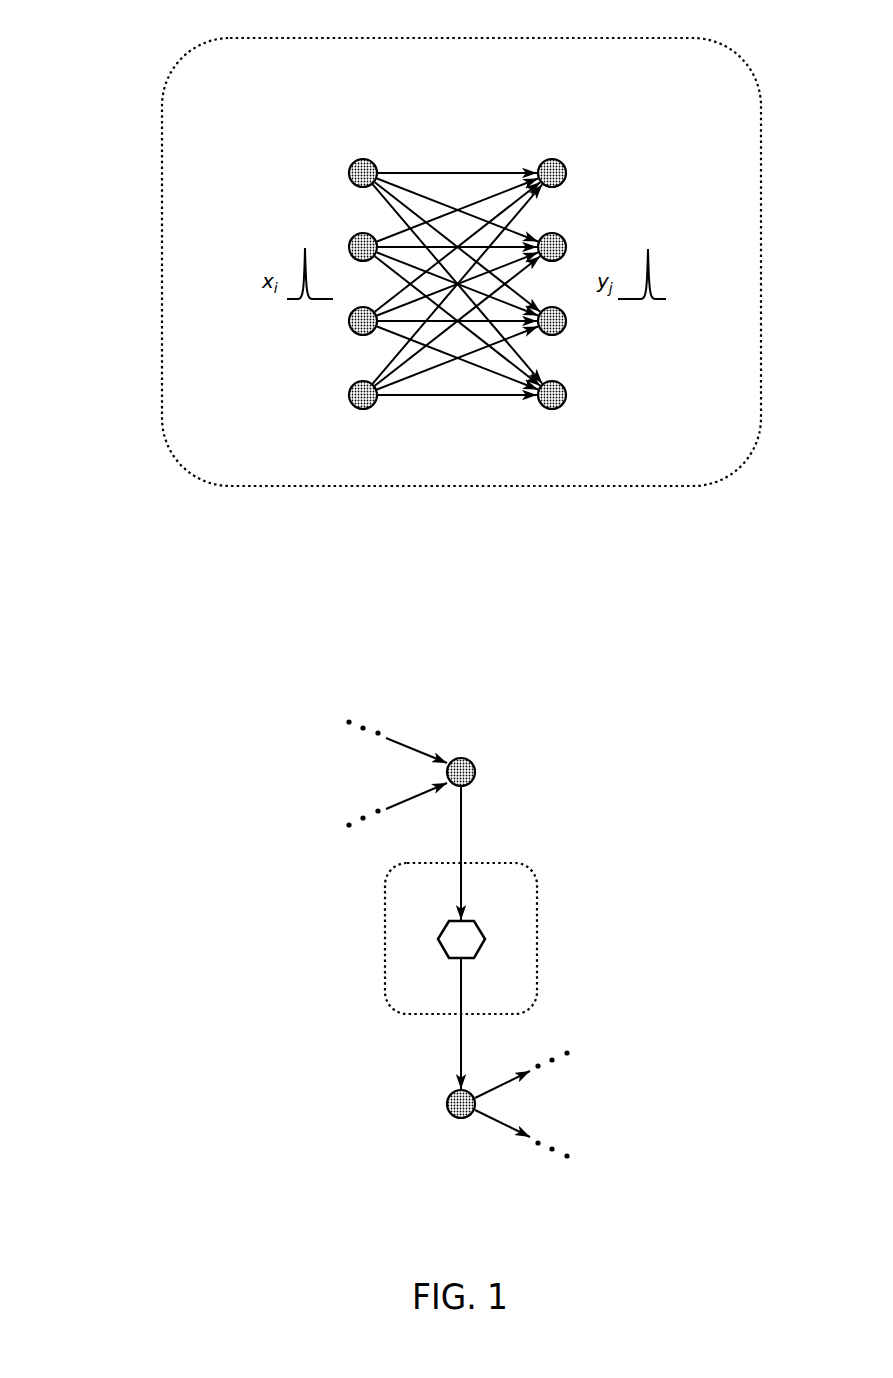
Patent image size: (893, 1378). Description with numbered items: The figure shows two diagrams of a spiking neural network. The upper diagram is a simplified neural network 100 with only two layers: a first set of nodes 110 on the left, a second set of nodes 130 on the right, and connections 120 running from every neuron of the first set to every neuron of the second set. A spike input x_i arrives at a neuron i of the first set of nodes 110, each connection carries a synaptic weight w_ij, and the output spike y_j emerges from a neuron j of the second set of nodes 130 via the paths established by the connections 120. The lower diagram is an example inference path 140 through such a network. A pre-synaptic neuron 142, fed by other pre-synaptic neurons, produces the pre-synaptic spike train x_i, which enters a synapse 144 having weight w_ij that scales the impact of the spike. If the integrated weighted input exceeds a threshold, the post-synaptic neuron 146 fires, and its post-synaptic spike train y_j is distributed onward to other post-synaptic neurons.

The simplified neural network 100 is at (592, 38).
The first set of nodes 110 is at (288, 199).
The connections 120 is at (453, 152).
The second set of nodes 130 is at (618, 195).
The inference path 140 is at (134, 709).
The pre-synaptic neuron 142 is at (462, 757).
The synapse 144 is at (537, 937).
The post-synaptic neuron 146 is at (461, 1118).